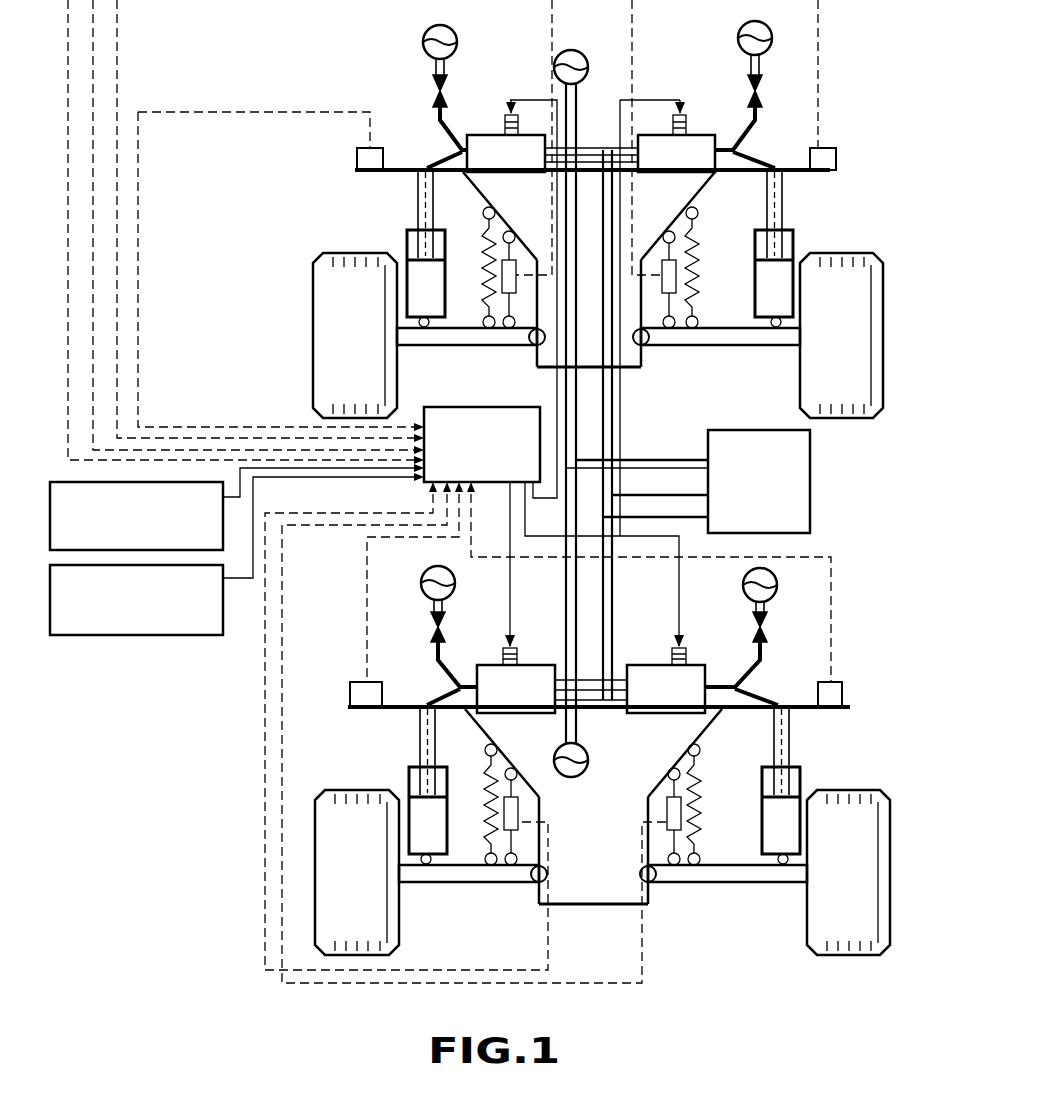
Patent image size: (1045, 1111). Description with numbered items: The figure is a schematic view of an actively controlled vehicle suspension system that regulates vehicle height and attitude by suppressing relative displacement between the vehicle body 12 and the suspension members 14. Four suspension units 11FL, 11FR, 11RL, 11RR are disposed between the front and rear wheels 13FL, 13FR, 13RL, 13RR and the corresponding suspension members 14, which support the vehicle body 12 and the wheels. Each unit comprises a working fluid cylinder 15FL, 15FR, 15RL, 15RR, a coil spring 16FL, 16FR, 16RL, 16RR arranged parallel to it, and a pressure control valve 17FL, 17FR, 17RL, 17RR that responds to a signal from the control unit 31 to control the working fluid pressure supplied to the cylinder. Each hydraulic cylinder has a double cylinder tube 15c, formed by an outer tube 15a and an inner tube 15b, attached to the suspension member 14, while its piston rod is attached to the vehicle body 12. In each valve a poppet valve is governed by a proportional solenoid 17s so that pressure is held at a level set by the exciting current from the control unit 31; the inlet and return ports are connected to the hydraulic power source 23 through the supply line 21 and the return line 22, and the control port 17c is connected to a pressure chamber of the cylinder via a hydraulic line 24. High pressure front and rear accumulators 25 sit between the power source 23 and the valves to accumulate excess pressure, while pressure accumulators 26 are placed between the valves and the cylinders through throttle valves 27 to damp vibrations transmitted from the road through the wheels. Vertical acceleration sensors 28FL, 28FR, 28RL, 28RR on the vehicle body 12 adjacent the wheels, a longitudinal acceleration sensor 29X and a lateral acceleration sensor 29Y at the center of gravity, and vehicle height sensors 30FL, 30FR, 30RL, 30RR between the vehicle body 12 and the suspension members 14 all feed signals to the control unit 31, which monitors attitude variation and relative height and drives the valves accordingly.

The suspension unit 11FL is at (365, 190).
The suspension unit 11FR is at (815, 196).
The suspension unit 11RL is at (345, 733).
The suspension unit 11RR is at (805, 750).
The vehicle body 12 is at (640, 370).
The front wheel 13FL is at (313, 345).
The front wheel 13FR is at (840, 418).
The rear wheel 13RL is at (335, 882).
The rear wheel 13RR is at (840, 957).
The suspension member 14 is at (478, 345).
The working fluid cylinder 15FL is at (406, 243).
The working fluid cylinder 15FR is at (793, 240).
The working fluid cylinder 15RL is at (410, 782).
The working fluid cylinder 15RR is at (803, 782).
The outer tube 15a is at (424, 328).
The inner tube 15b is at (433, 218).
The double cylinder tube 15c is at (445, 272).
The coil spring 16FL is at (486, 275).
The coil spring 16FR is at (700, 268).
The coil spring 16RL is at (525, 840).
The coil spring 16RR is at (700, 812).
The pressure control valve 17FL is at (492, 104).
The pressure control valve 17FR is at (679, 113).
The pressure control valve 17RL is at (490, 665).
The pressure control valve 17RR is at (679, 648).
The proportional solenoid 17s is at (511, 113).
The control port 17c is at (459, 146).
The supply line 21 is at (680, 460).
The return line 22 is at (690, 512).
The hydraulic power source 23 is at (812, 495).
The hydraulic line 24 is at (440, 165).
The high pressure accumulator 25 is at (586, 62).
The pressure accumulator 26 is at (423, 40).
The throttle valve 27 is at (432, 92).
The vertical acceleration sensor 28FL is at (357, 152).
The vertical acceleration sensor 28FR is at (826, 148).
The vertical acceleration sensor 28RL is at (364, 682).
The vertical acceleration sensor 28RR is at (835, 682).
The longitudinal acceleration sensor 29X is at (178, 482).
The lateral acceleration sensor 29Y is at (180, 635).
The vehicle height sensor 30FL is at (516, 296).
The vehicle height sensor 30FR is at (680, 297).
The vehicle height sensor 30RL is at (520, 812).
The vehicle height sensor 30RR is at (665, 806).
The control unit 31 is at (484, 484).